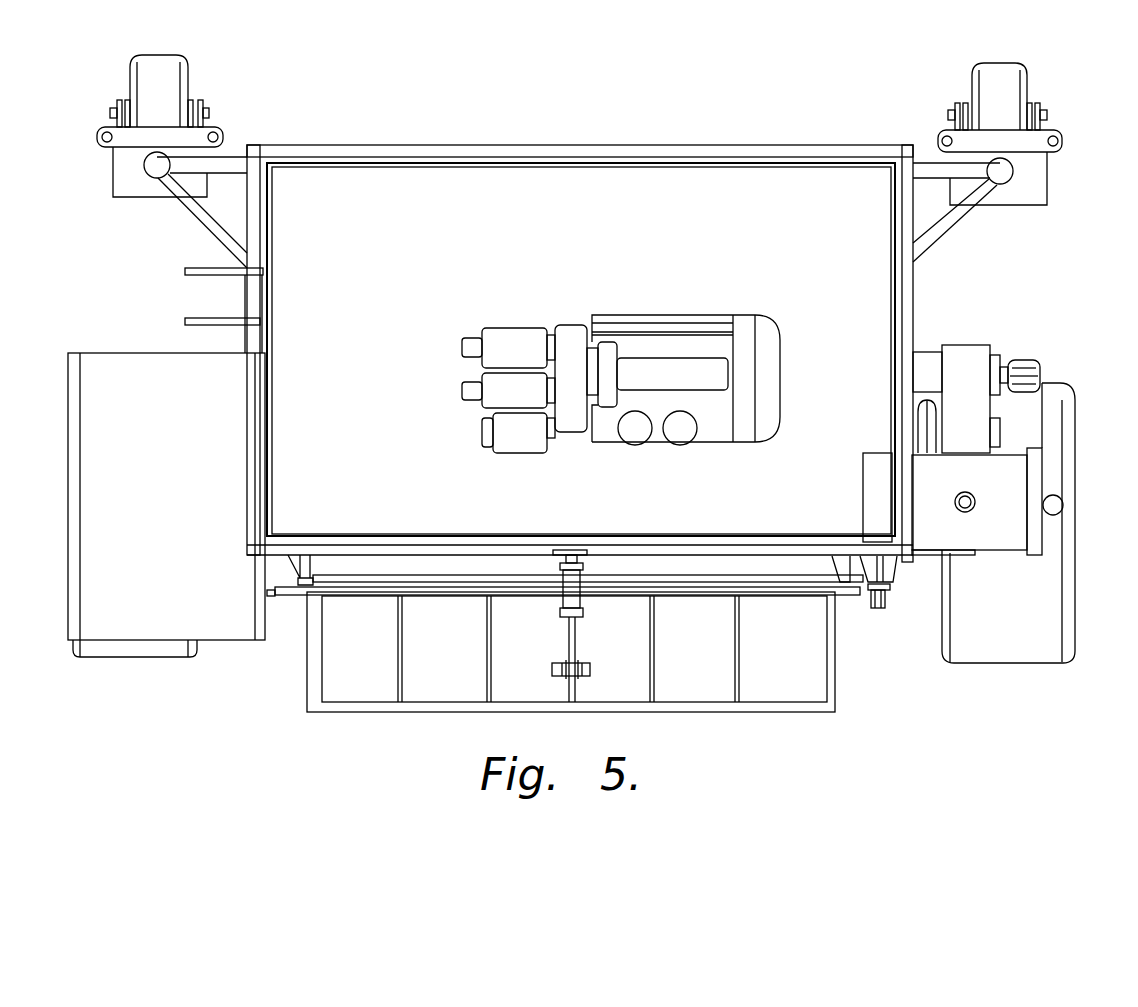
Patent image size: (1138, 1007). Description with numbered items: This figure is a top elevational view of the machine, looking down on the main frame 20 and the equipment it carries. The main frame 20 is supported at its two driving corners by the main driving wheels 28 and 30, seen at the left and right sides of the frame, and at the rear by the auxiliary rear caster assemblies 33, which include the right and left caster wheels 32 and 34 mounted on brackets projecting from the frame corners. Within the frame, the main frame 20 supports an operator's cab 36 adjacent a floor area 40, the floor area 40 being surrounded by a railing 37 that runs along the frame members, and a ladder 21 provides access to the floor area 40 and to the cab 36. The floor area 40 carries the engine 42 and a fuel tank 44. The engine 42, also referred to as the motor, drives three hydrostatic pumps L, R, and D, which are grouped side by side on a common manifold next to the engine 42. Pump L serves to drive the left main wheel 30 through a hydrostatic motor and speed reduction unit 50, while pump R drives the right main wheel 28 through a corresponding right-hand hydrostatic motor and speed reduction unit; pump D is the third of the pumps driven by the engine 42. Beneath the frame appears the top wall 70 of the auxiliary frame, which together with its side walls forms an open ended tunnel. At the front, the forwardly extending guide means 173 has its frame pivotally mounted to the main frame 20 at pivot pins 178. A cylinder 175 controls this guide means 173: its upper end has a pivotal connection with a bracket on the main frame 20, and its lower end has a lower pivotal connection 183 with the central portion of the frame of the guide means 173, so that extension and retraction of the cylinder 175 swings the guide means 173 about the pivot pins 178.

The main frame 20 is at (561, 145).
The ladder 21 is at (195, 270).
The right main driving wheel 28 is at (122, 646).
The left main driving wheel 30 is at (1056, 408).
The right caster wheel 32 is at (230, 26).
The auxiliary rear caster assembly 33 is at (112, 161).
The left caster wheel 34 is at (998, 35).
The operator's cab 36 is at (107, 365).
The railing 37 is at (343, 146).
The floor area 40 is at (768, 187).
The engine 42 is at (643, 316).
The fuel tank 44 is at (1057, 529).
The hydrostatic motor and speed reduction unit 50 is at (1000, 353).
The top wall 70 is at (708, 683).
The guide means 173 is at (302, 670).
The cylinder 175 is at (574, 590).
The pivot pins 178 is at (887, 597).
The lower pivotal connection 183 is at (552, 670).
The hydrostatic pump L is at (470, 347).
The hydrostatic pump R is at (470, 391).
The hydrostatic pump D is at (485, 436).